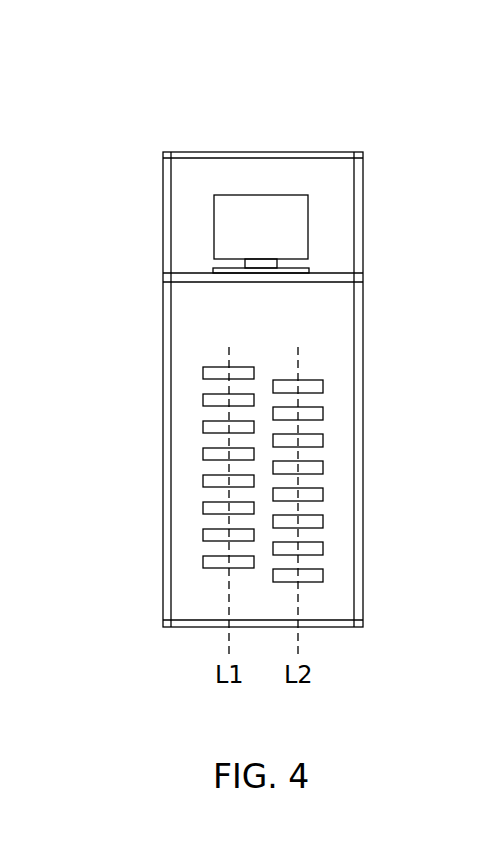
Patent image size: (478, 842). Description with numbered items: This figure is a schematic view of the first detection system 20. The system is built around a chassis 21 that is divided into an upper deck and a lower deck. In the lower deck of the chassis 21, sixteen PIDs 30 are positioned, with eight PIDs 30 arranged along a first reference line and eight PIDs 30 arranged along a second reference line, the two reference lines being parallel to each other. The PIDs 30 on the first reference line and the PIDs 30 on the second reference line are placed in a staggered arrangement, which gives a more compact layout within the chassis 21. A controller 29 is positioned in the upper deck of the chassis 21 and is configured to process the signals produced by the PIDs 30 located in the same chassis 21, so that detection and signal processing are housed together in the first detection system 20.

The first detection system 20 is at (152, 128).
The chassis 21 is at (163, 222).
The controller 29 is at (279, 237).
The PIDs 30 is at (203, 373).